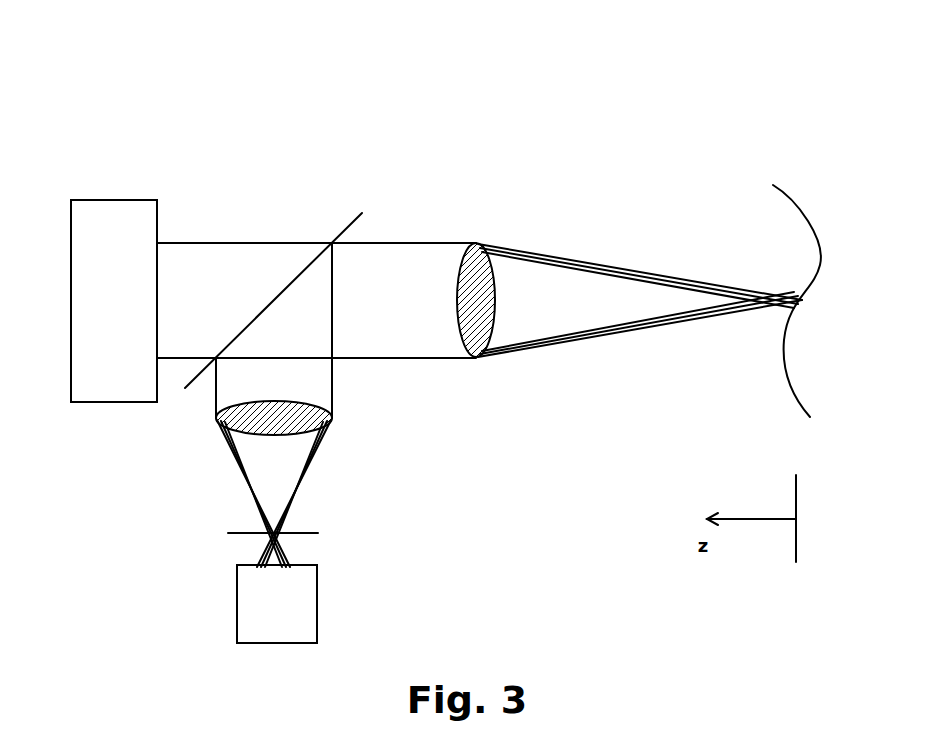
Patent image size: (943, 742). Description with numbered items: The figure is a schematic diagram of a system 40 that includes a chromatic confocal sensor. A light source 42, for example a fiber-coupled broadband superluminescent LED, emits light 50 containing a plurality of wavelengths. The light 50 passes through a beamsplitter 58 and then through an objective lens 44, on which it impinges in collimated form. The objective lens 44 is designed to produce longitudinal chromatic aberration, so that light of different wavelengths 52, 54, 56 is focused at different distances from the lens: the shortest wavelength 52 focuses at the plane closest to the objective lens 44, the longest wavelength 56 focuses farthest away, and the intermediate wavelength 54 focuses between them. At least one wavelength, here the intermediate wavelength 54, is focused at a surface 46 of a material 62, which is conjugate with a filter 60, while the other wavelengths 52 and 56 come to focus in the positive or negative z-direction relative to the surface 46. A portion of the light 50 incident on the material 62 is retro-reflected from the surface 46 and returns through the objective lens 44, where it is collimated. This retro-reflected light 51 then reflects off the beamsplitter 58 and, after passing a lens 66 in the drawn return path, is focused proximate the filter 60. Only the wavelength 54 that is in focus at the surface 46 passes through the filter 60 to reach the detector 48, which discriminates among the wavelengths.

The system 40 is at (449, 78).
The light source 42 is at (115, 230).
The objective lens 44 is at (488, 250).
The surface 46 is at (813, 263).
The detector 48 is at (288, 620).
The light 50 is at (187, 358).
The retro-reflected light 51 is at (216, 373).
The shortest wavelength 52 is at (677, 313).
The intermediate wavelength 54 is at (285, 552).
The longest wavelength 56 is at (728, 287).
The beamsplitter 58 is at (352, 222).
The filter 60 is at (258, 542).
The material 62 is at (810, 200).
The collecting lens 66 is at (318, 422).